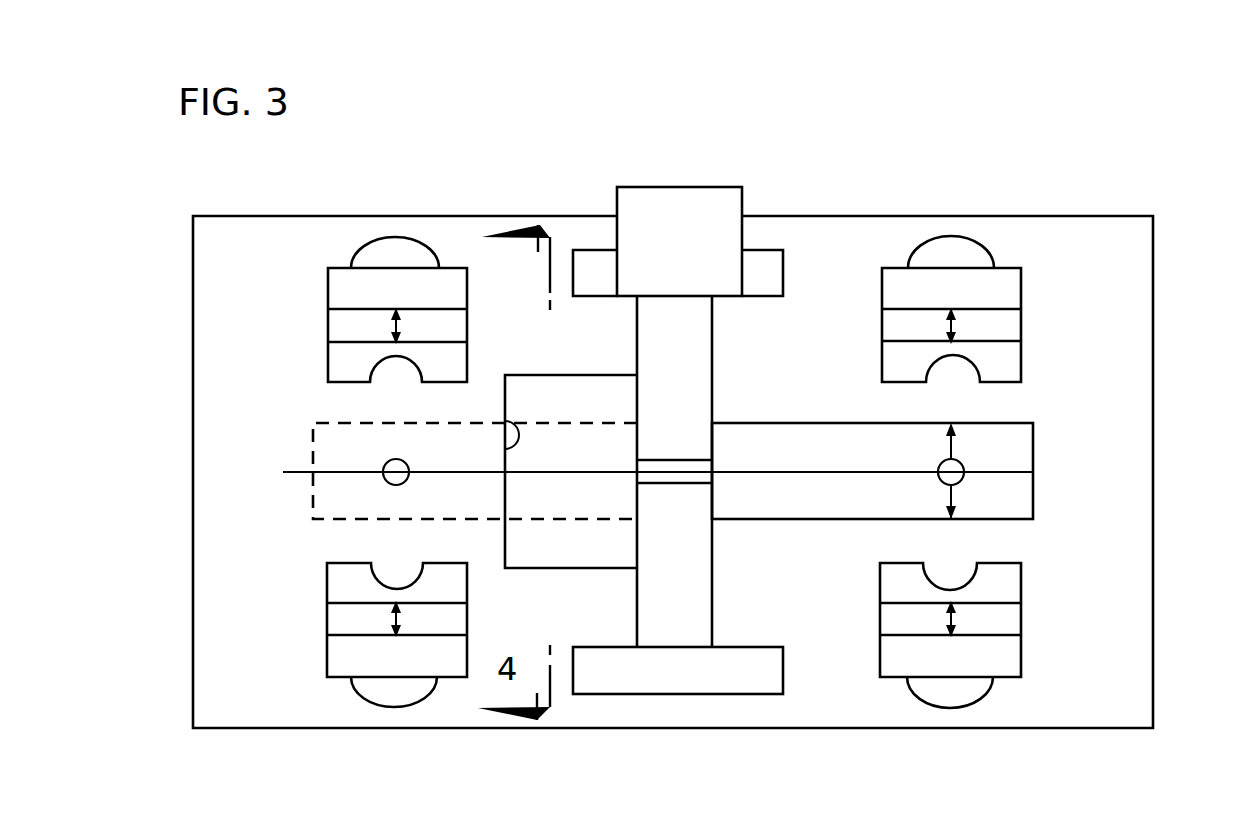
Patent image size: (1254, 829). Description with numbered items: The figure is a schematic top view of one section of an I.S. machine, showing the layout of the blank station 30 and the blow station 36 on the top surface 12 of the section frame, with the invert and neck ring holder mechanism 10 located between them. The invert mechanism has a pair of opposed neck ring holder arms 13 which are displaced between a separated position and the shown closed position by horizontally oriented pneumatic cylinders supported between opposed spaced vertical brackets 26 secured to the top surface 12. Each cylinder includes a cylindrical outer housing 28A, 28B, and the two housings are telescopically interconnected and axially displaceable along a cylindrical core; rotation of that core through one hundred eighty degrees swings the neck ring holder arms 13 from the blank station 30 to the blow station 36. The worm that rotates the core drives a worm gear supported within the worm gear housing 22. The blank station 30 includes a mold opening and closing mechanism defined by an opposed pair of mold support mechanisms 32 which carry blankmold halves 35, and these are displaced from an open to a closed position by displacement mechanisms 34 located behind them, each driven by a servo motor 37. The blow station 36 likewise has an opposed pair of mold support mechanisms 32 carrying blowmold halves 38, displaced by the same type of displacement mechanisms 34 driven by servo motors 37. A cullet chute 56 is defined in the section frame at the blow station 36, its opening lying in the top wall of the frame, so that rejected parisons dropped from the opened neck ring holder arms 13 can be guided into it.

The invert and neck ring holder mechanism 10 is at (829, 202).
The top surface 12 is at (788, 368).
The neck ring holder arms 13 is at (1015, 495).
The worm gear housing 22 is at (722, 187).
The brackets 26 is at (594, 262).
The cylindrical outer housing 28A is at (700, 390).
The cylindrical outer housing 28B is at (700, 558).
The blank station 30 is at (1058, 360).
The mold support mechanisms 32 is at (450, 325).
The displacement mechanisms 34 is at (343, 292).
The blankmold halves 35 is at (1002, 355).
The blow station 36 is at (276, 329).
The servo motor 37 is at (390, 250).
The blowmold halves 38 is at (452, 360).
The cullet chute 56 is at (505, 420).